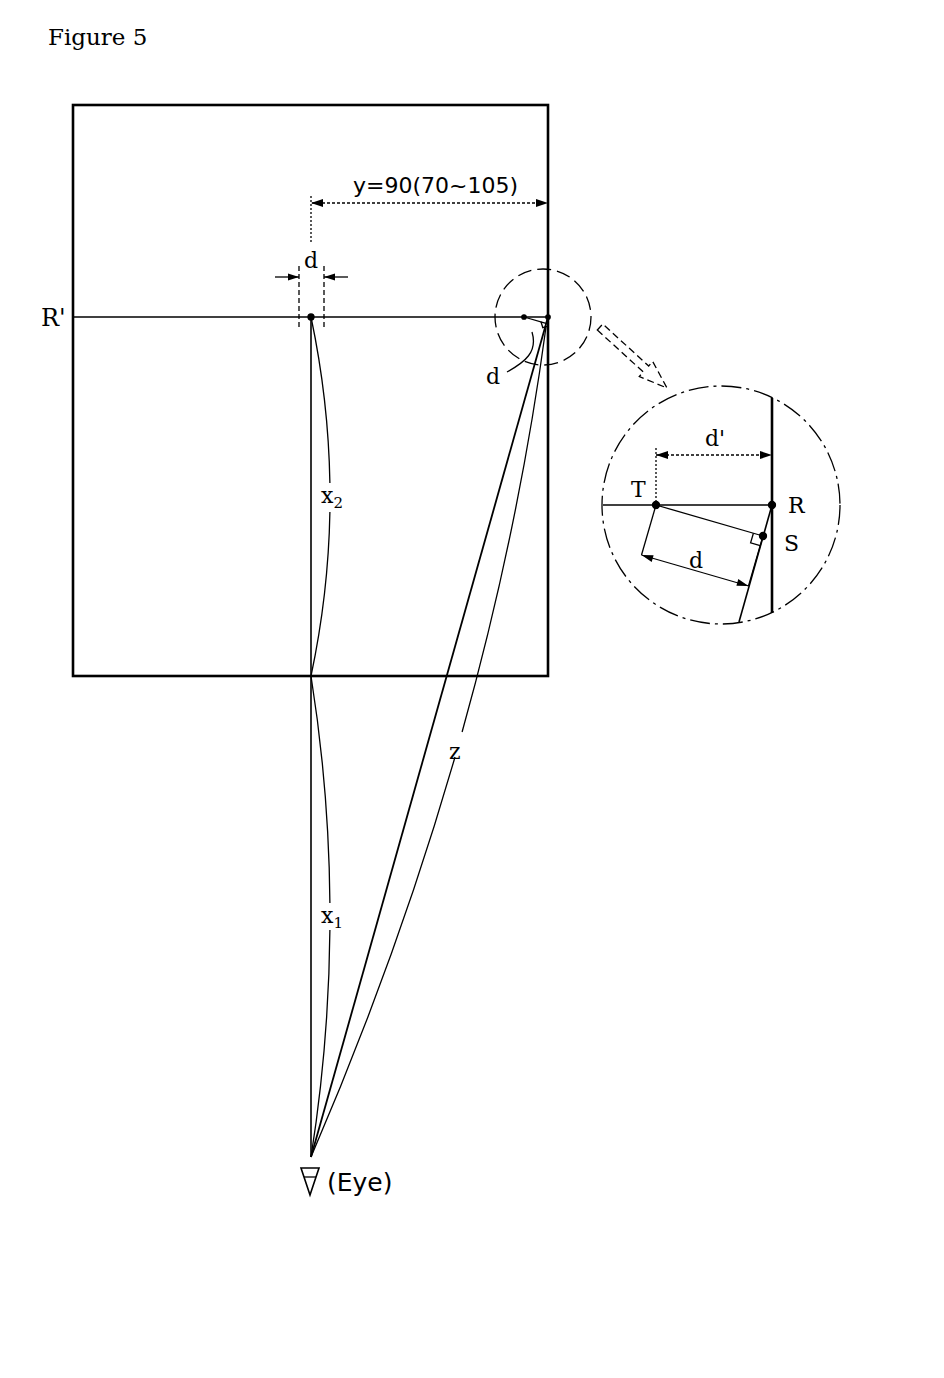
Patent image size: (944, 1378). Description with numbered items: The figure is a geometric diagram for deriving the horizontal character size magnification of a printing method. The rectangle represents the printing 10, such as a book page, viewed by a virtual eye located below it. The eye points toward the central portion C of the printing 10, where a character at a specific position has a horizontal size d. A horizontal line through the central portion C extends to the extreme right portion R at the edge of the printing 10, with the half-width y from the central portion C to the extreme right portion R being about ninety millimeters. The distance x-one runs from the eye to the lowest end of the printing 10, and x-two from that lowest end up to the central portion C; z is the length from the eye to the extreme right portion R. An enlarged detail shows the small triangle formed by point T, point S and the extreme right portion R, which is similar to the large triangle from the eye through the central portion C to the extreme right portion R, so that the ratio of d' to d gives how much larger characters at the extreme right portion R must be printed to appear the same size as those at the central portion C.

The printing 10 is at (128, 677).
The central portion C is at (308, 321).
The point T is at (529, 307).
The extreme right portion R is at (558, 305).
The point S is at (555, 336).